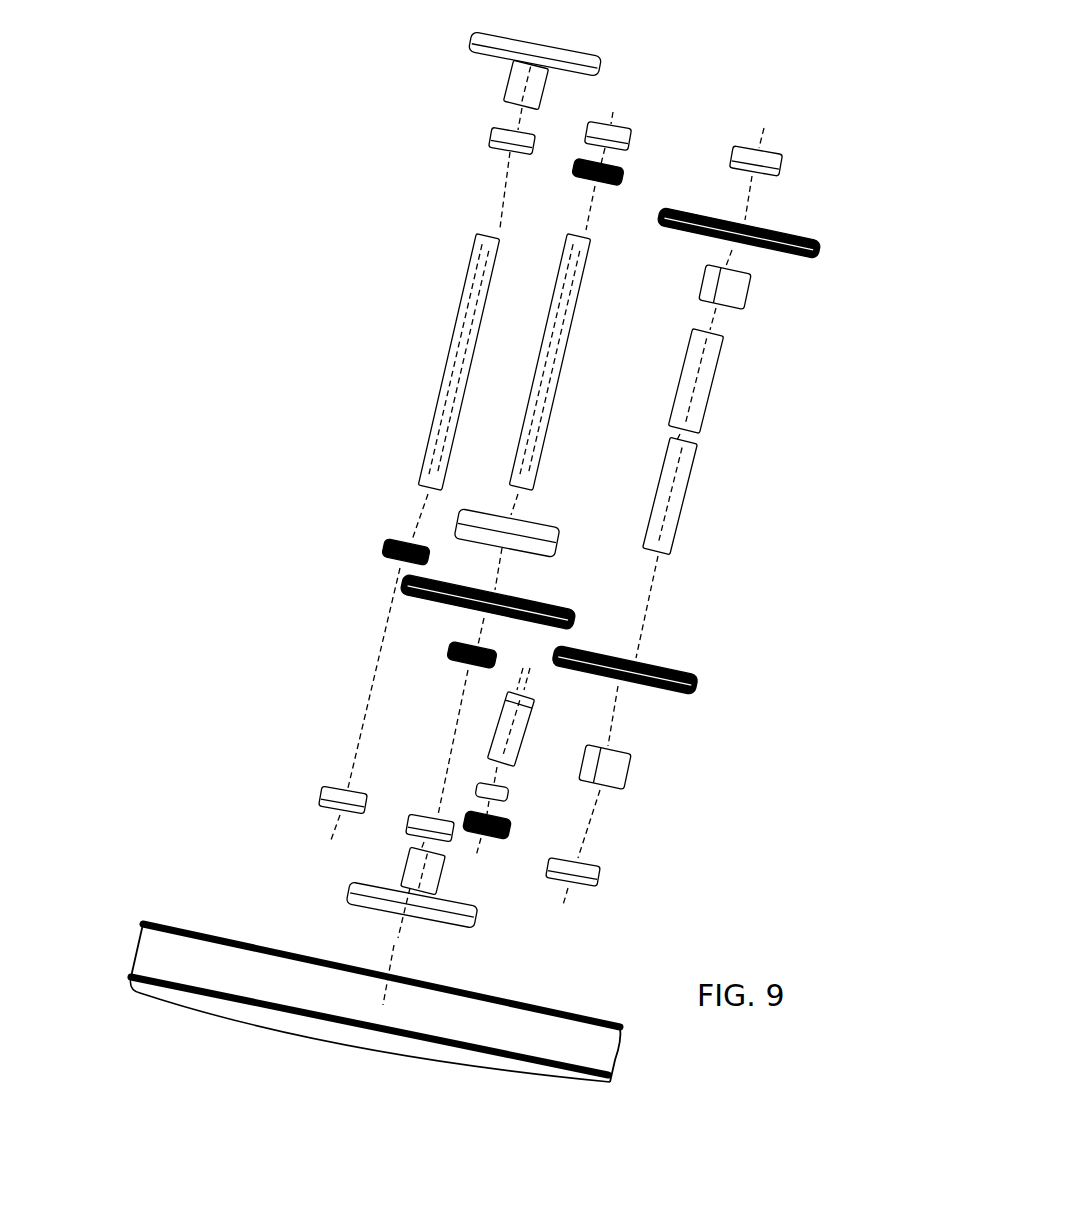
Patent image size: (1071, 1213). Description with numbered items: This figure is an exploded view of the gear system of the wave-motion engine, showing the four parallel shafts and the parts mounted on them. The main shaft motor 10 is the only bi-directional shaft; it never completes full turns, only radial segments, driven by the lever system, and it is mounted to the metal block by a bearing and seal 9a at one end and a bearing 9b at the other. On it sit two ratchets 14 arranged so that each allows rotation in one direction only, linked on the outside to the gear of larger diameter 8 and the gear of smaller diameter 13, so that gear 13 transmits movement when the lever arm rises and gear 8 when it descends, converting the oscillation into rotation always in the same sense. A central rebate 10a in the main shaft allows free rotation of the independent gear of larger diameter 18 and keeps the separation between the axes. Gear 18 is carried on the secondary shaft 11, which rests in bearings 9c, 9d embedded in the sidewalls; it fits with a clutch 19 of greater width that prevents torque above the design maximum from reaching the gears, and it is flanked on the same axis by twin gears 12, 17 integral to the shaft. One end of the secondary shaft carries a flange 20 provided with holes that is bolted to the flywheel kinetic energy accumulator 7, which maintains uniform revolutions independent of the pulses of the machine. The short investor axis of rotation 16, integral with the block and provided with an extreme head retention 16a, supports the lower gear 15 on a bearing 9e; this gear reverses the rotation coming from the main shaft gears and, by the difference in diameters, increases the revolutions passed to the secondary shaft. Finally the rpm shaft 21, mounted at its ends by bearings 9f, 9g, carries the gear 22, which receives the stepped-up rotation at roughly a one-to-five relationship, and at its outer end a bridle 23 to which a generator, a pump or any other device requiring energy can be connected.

The flywheel kinetic energy accumulator 7 is at (455, 993).
The gear of larger diameter 8 is at (768, 228).
The bearing and seal 9a is at (592, 864).
The bearing 9b is at (778, 153).
The bearing 9c is at (423, 816).
The bearing 9d is at (627, 131).
The bearing 9e is at (498, 789).
The bearing 9f is at (320, 798).
The bearing 9g is at (490, 140).
The main shaft motor 10 is at (715, 356).
The central rebate 10a is at (688, 447).
The secondary shaft 11 is at (566, 323).
The twin gear 12 is at (580, 177).
The gear of smaller diameter 13 is at (690, 690).
The ratchet 14 is at (738, 282).
The lower gear 15 is at (492, 842).
The investor axis of rotation 16 is at (514, 722).
The extreme head retention 16a is at (519, 657).
The twin gear 17 is at (458, 662).
The independent gear of larger diameter 18 is at (420, 602).
The clutch 19 is at (552, 540).
The flange 20 is at (350, 892).
The rpm shaft 21 is at (442, 358).
The gear 22 is at (385, 552).
The bridle 23 is at (478, 46).